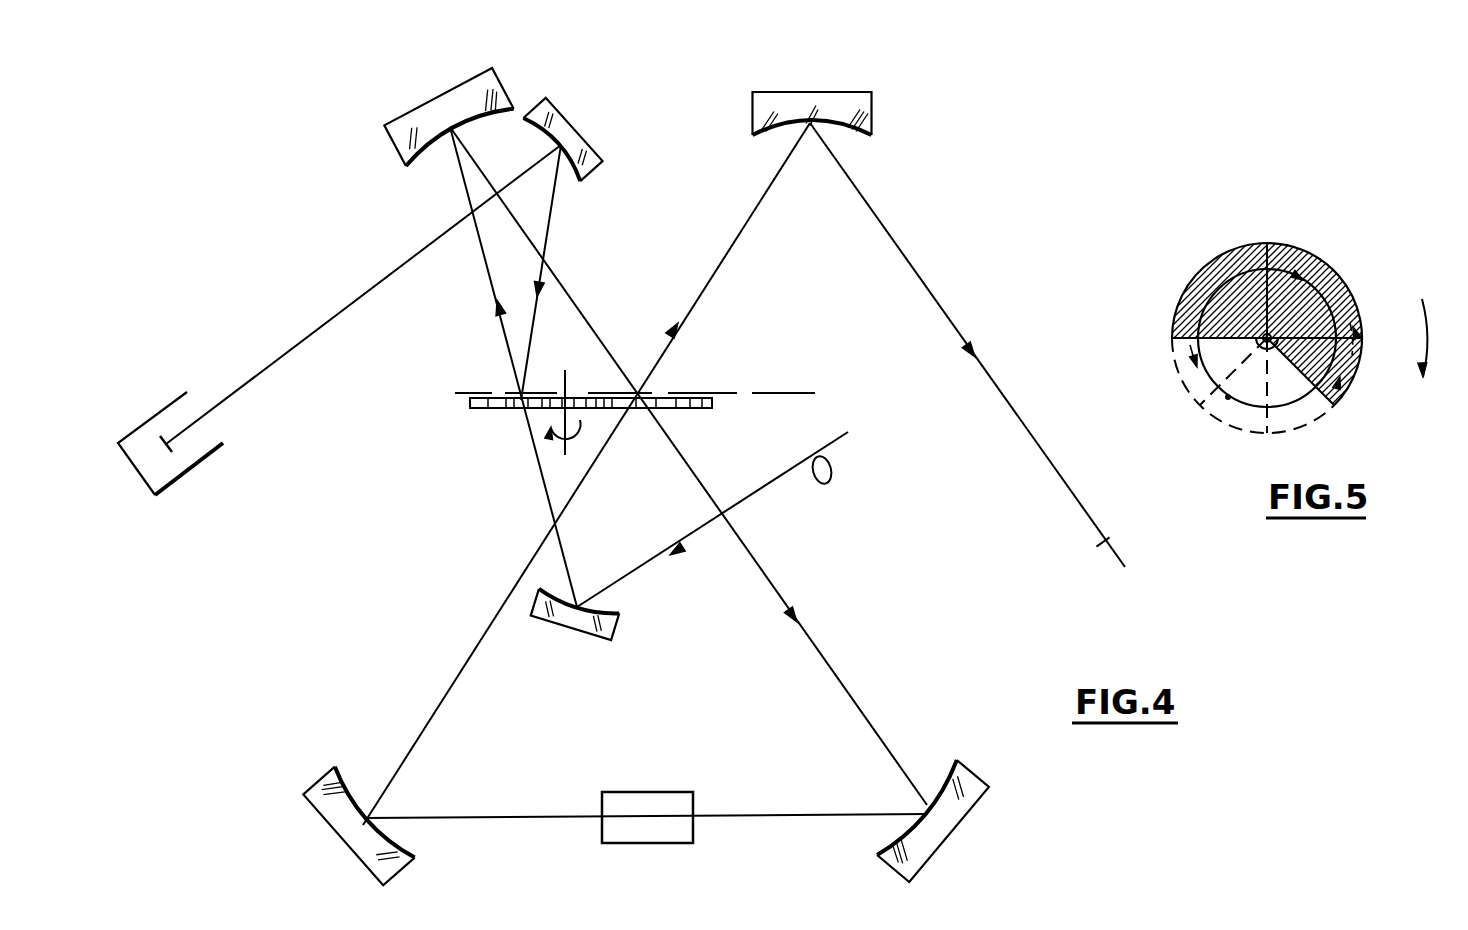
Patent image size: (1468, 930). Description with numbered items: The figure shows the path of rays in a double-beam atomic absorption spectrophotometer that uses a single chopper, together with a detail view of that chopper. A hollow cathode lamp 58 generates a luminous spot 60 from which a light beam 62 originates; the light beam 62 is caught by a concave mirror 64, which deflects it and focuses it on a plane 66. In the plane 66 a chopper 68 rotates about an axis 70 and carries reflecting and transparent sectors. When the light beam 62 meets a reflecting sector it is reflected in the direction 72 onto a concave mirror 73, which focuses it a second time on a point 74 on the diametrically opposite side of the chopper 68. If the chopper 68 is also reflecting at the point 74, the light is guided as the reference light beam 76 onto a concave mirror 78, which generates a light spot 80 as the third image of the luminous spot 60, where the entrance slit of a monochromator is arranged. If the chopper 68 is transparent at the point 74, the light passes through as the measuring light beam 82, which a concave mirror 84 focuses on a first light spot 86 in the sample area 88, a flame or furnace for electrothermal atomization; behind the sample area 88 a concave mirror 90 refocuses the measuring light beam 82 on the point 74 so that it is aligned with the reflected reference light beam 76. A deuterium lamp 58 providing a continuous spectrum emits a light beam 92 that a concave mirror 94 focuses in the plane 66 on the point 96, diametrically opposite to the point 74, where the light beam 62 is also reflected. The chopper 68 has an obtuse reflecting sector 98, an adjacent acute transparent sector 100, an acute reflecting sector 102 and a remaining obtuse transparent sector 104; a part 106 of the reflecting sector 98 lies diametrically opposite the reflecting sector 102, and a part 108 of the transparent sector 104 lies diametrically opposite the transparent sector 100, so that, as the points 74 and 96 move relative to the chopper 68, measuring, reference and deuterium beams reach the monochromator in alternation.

In FIG. 4, the hollow cathode lamp 58 is at (163, 410).
In FIG. 4, the luminous spot 60 is at (167, 440).
In FIG. 4, the light beam 62 is at (343, 305).
In FIG. 4, the concave mirror 64 is at (586, 137).
In FIG. 4, the plane 66 is at (470, 392).
In FIG. 4, the chopper 68 is at (542, 410).
In FIG. 5, the chopper 68 is at (1319, 244).
In FIG. 4, the axis 70 is at (567, 378).
In FIG. 5, the axis 70 is at (1257, 346).
In FIG. 4, the direction 72 is at (490, 280).
In FIG. 4, the concave mirror 73 is at (442, 100).
In FIG. 4, the point 74 is at (647, 392).
In FIG. 5, the point 74 is at (1228, 400).
In FIG. 4, the reference light beam 76 is at (728, 258).
In FIG. 4, the concave mirror 78 is at (870, 105).
In FIG. 4, the light spot 80 is at (1125, 566).
In FIG. 4, the measuring light beam 82 is at (841, 683).
In FIG. 4, the concave mirror 84 is at (970, 770).
In FIG. 4, the first light spot 86 is at (645, 823).
In FIG. 4, the sample area 88 is at (695, 798).
In FIG. 4, the concave mirror 90 is at (318, 780).
In FIG. 4, the light beam 92 is at (712, 535).
In FIG. 4, the concave mirror 94 is at (575, 632).
In FIG. 4, the point 96 is at (500, 410).
In FIG. 5, the point 96 is at (1257, 290).
In FIG. 5, the reflecting sector 98 is at (1250, 250).
In FIG. 5, the transparent sector 100 is at (1352, 297).
In FIG. 5, the reflecting sector 102 is at (1337, 393).
In FIG. 5, the transparent sector 104 is at (1230, 395).
In FIG. 5, the part 106 is at (1192, 295).
In FIG. 5, the part 108 is at (1185, 353).